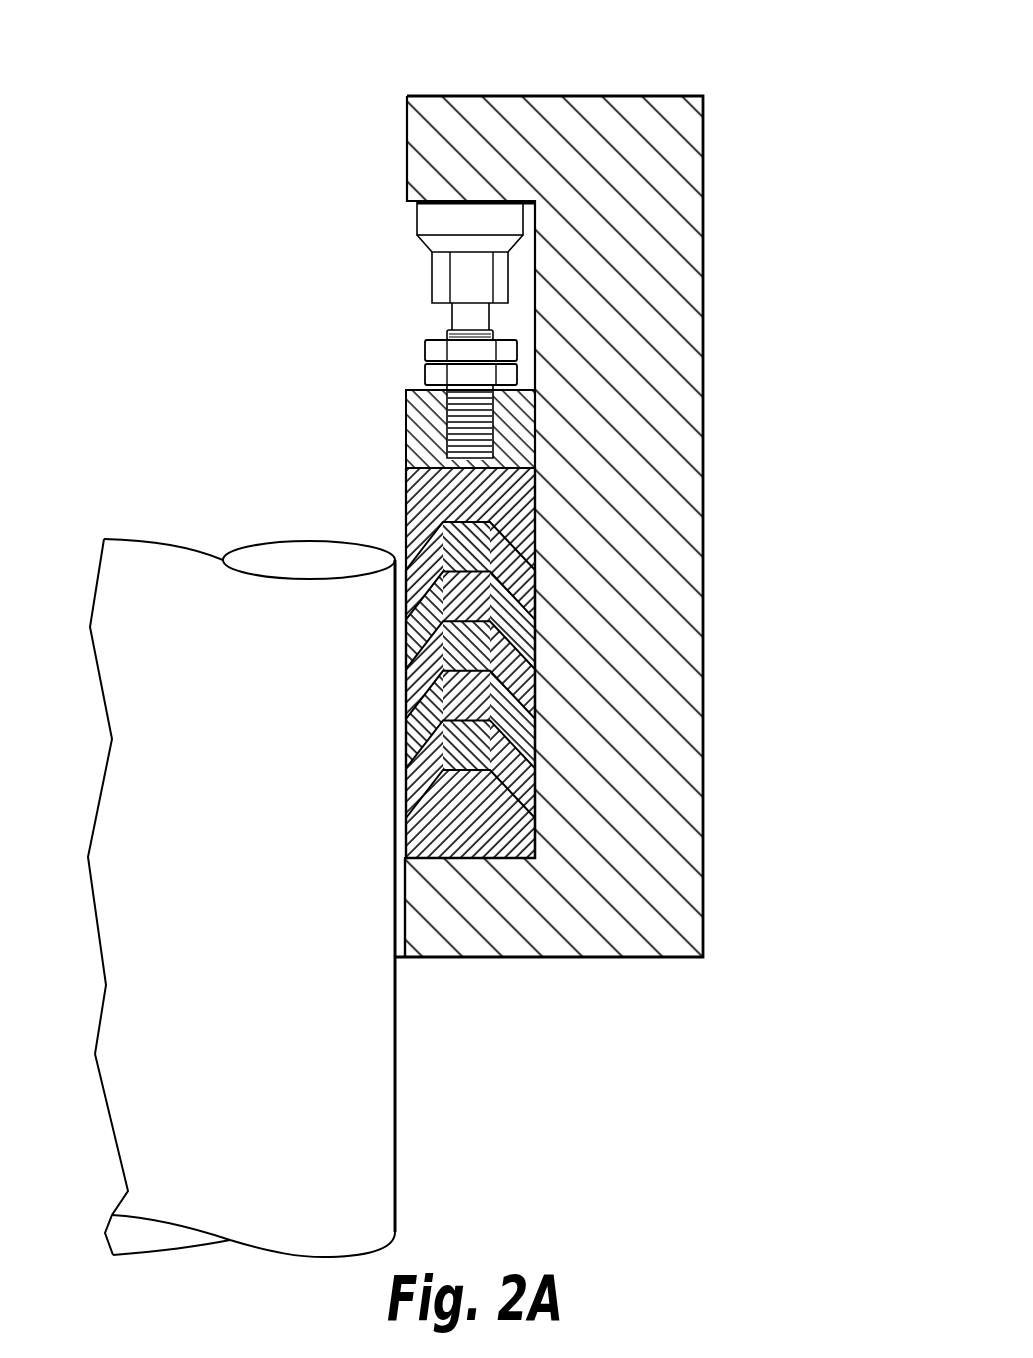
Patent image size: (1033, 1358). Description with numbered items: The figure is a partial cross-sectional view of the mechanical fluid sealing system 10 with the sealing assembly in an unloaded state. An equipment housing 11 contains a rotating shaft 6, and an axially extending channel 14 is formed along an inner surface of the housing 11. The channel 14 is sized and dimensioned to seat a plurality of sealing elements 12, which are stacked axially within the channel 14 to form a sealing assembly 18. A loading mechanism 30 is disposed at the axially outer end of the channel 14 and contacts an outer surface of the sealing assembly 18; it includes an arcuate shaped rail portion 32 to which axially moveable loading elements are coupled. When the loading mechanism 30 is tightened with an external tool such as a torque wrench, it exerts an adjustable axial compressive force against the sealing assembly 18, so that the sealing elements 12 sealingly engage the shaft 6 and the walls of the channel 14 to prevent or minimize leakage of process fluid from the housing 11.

The rotating shaft 6 is at (214, 852).
The mechanical fluid sealing system 10 is at (582, 80).
The equipment housing 11 is at (662, 901).
The sealing elements 12 is at (535, 754).
The channel 14 is at (381, 314).
The sealing assembly 18 is at (553, 553).
The loading mechanism 30 is at (457, 278).
The rail portion 32 is at (407, 431).